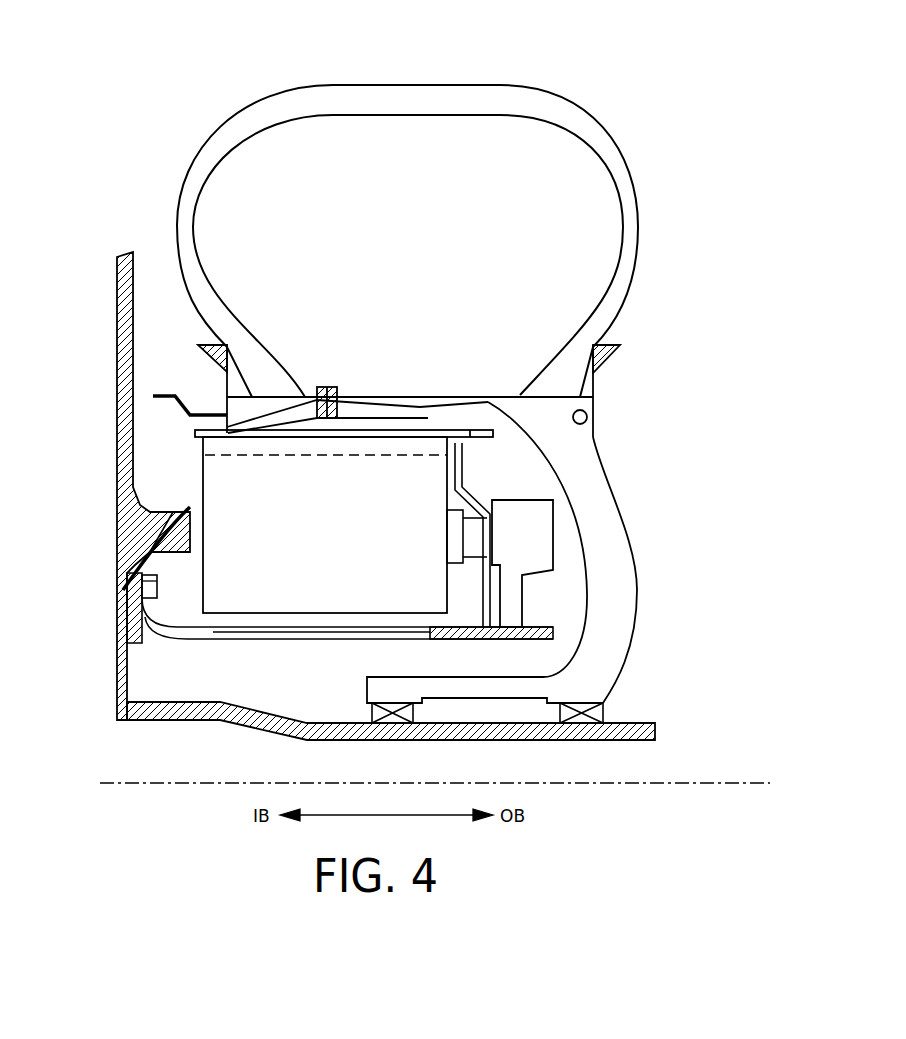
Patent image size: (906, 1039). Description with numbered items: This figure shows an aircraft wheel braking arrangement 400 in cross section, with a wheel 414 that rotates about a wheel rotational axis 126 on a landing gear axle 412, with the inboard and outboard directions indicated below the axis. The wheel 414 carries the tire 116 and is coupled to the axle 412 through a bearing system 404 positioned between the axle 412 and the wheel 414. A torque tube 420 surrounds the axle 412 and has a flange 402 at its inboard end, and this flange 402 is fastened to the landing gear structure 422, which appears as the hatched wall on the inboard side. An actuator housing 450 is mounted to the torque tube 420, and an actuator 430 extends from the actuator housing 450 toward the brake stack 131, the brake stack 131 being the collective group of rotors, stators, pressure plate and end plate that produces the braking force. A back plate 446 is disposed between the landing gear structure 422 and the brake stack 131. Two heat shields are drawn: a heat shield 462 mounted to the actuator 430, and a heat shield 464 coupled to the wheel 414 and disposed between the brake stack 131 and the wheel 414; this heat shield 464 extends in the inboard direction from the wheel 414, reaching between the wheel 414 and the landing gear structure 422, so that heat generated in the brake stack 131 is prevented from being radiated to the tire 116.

The aircraft wheel braking arrangement 400 is at (680, 98).
The tire 116 is at (448, 121).
The wheel 414 is at (432, 395).
The heat shield 464 is at (172, 392).
The back plate 446 is at (190, 507).
The brake stack 131 is at (340, 537).
The actuator 430 is at (470, 530).
The heat shield 462 is at (480, 577).
The actuator housing 450 is at (543, 528).
The flange 402 is at (128, 580).
The landing gear structure 422 is at (120, 663).
The torque tube 420 is at (197, 628).
The bearing system 404 is at (342, 711).
The axle 412 is at (338, 725).
The wheel rotational axis 126 is at (667, 786).